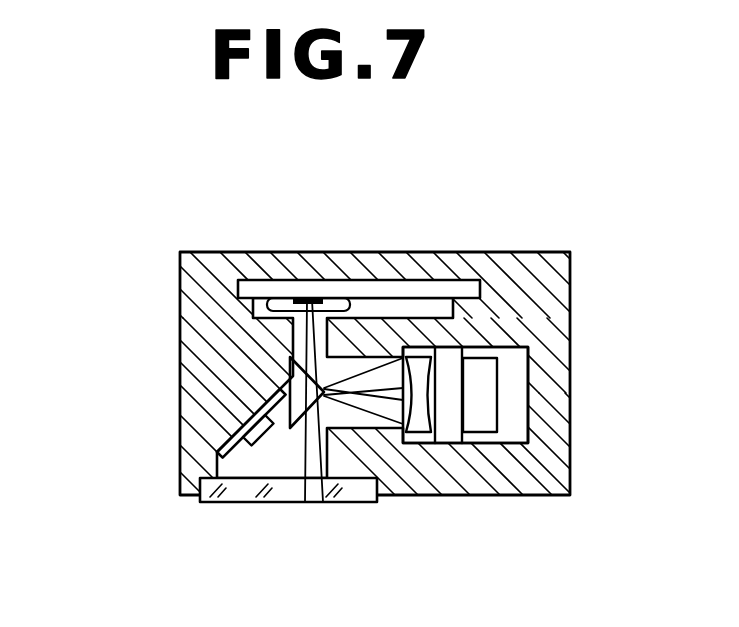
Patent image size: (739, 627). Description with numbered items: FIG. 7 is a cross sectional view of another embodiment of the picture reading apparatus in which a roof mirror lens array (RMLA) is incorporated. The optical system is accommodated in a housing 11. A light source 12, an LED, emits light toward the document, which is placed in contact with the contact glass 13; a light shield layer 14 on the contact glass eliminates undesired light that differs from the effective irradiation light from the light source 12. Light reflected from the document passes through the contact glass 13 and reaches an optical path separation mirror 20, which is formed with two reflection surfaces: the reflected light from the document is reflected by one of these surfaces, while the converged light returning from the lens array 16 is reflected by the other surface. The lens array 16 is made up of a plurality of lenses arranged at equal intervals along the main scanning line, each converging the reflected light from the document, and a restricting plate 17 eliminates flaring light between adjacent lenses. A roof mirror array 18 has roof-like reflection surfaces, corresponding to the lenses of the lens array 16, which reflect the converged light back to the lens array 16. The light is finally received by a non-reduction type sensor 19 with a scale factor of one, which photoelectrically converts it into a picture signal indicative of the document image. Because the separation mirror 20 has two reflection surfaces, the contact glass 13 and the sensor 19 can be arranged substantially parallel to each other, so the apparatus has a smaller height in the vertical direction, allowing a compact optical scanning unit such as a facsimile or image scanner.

The housing 11 is at (565, 303).
The light source 12 is at (245, 437).
The contact glass 13 is at (362, 502).
The light shield layer 14 is at (322, 502).
The lens array 16 is at (408, 441).
The restricting plate 17 is at (453, 441).
The roof mirror array 18 is at (518, 400).
The non-reduction type sensor 19 is at (398, 290).
The optical path separation mirror 20 is at (288, 385).